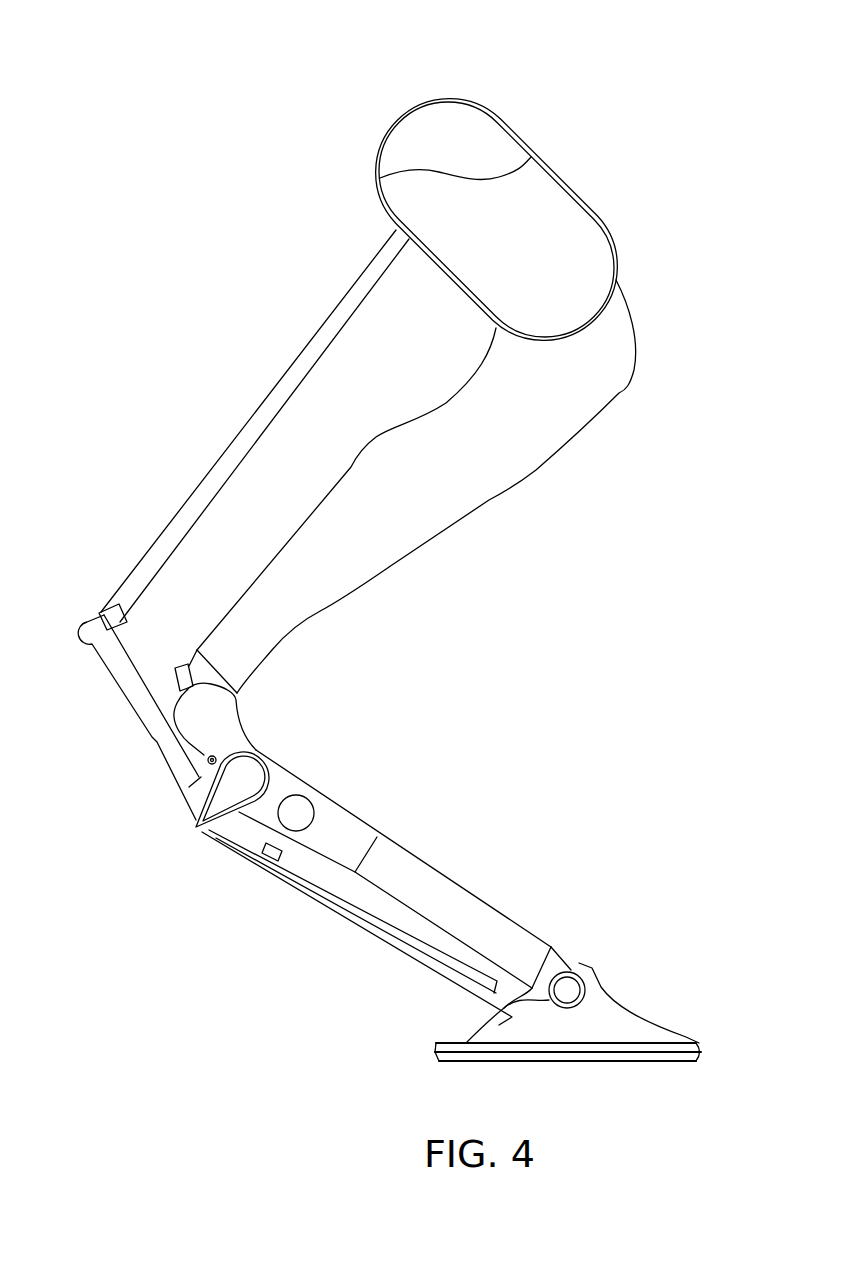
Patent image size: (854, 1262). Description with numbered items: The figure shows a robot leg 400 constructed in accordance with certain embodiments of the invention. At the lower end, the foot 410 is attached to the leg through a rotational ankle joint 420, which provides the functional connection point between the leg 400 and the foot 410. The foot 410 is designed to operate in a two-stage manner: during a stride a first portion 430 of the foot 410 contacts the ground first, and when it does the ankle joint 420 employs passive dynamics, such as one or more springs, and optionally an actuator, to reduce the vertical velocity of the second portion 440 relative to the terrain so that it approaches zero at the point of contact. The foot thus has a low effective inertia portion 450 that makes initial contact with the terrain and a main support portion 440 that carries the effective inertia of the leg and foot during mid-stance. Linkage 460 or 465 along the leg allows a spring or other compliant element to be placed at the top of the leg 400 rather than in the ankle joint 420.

The robot leg 400 is at (640, 72).
The foot 410 is at (564, 976).
The rotational ankle joint 420 is at (568, 990).
The first portion 430 is at (437, 1048).
The second portion 440 is at (700, 1045).
The low effective inertia portion 450 is at (440, 1057).
The linkage 460 is at (260, 403).
The linkage 465 is at (353, 932).